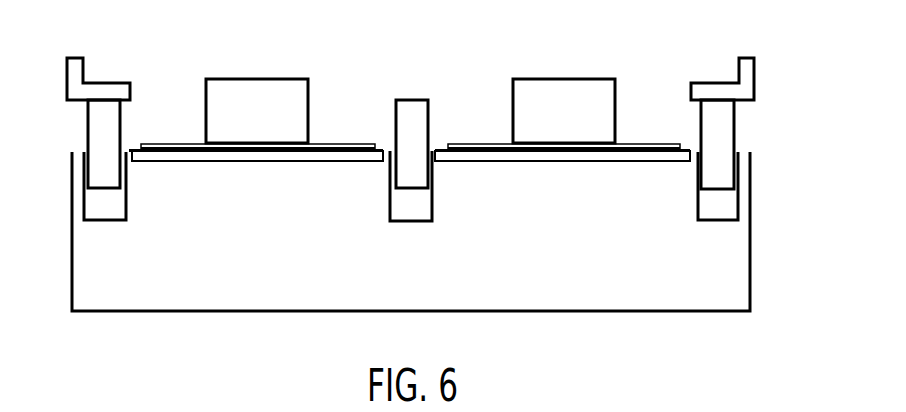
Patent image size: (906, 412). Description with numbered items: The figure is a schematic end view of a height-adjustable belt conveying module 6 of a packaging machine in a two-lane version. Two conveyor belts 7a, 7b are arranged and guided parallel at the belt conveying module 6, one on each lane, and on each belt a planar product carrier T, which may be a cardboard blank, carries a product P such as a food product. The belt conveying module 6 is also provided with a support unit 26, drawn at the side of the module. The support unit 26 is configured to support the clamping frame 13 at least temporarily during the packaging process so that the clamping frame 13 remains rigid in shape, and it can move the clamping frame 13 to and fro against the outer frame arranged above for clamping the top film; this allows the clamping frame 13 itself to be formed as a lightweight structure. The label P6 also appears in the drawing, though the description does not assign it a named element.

The belt conveying module 6 is at (108, 295).
The conveyor belt 7a is at (272, 162).
The conveyor belt 7b is at (578, 163).
The clamping frame 13 is at (67, 69).
The support unit 26 is at (748, 120).
The pin position / process step P6 is at (714, 70).
The product P is at (234, 118).
The product carrier T is at (347, 143).